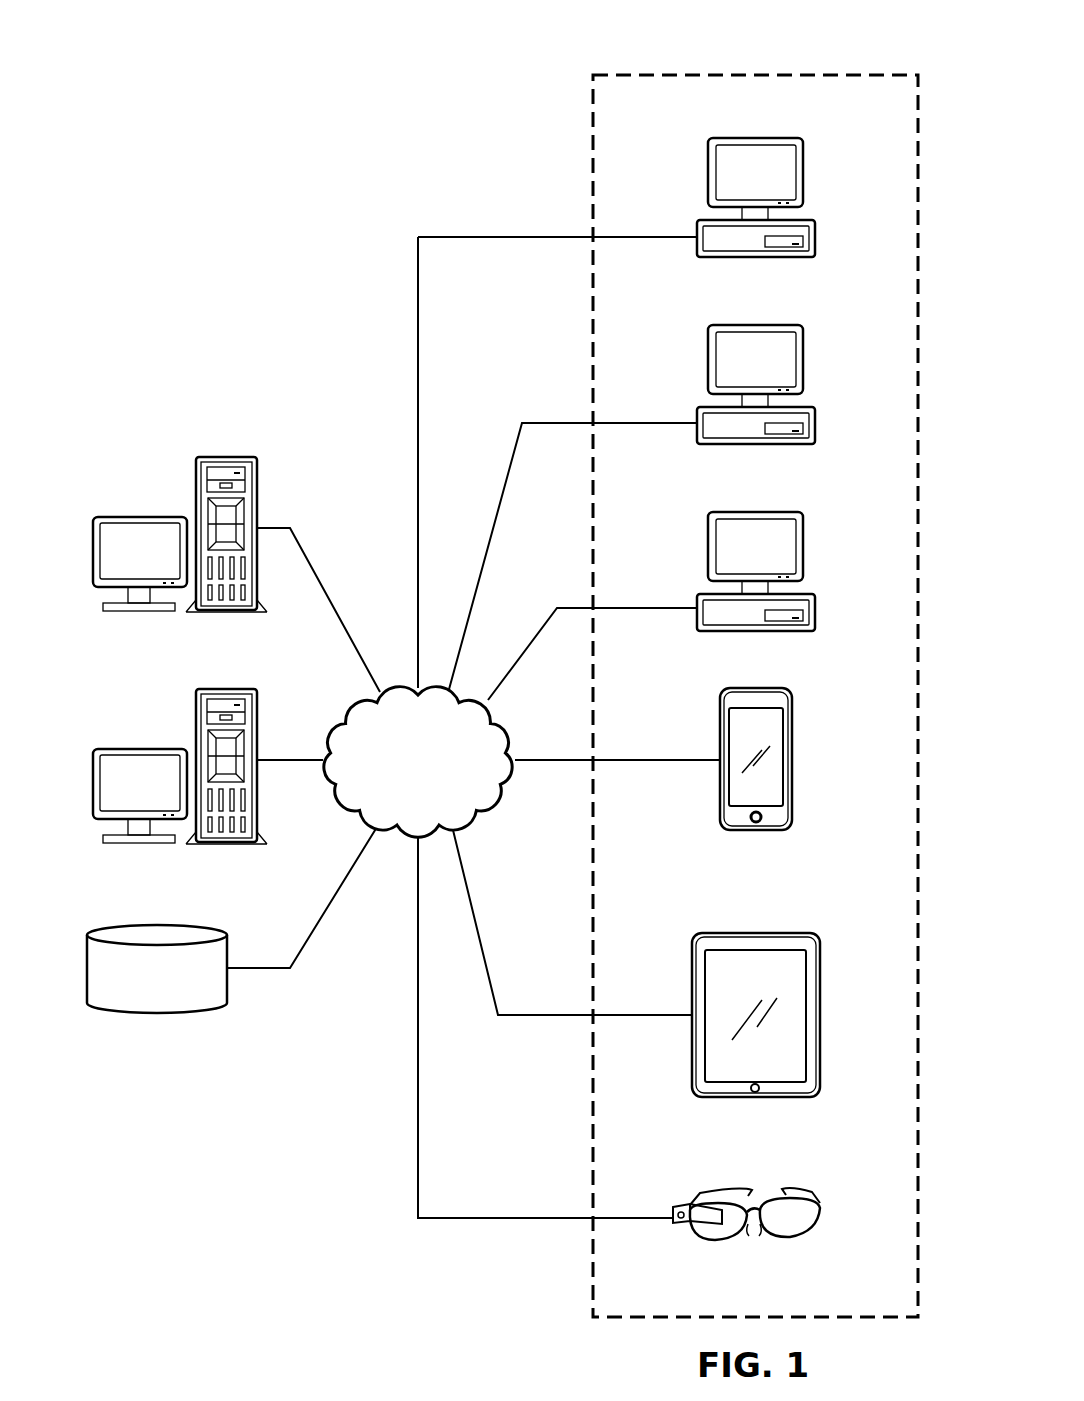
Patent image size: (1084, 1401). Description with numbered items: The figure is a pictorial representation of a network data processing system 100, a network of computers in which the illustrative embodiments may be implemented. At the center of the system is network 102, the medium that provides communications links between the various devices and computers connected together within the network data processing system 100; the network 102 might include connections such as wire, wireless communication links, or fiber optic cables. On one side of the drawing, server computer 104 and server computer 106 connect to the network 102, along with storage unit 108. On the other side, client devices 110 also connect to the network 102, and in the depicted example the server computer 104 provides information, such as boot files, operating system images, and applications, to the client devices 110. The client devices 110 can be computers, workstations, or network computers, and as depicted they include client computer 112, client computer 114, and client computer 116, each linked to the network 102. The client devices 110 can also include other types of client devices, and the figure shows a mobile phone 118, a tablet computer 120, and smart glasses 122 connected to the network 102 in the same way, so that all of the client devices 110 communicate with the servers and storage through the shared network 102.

The network data processing system 100 is at (280, 328).
The network 102 is at (395, 794).
The server computer 104 is at (141, 517).
The server computer 106 is at (184, 780).
The storage unit 108 is at (157, 1014).
The client devices 110 is at (830, 62).
The client computer 112 is at (803, 172).
The client computer 114 is at (767, 398).
The client computer 116 is at (767, 585).
The mobile phone 118 is at (792, 777).
The tablet computer 120 is at (820, 1027).
The smart glasses 122 is at (820, 1222).